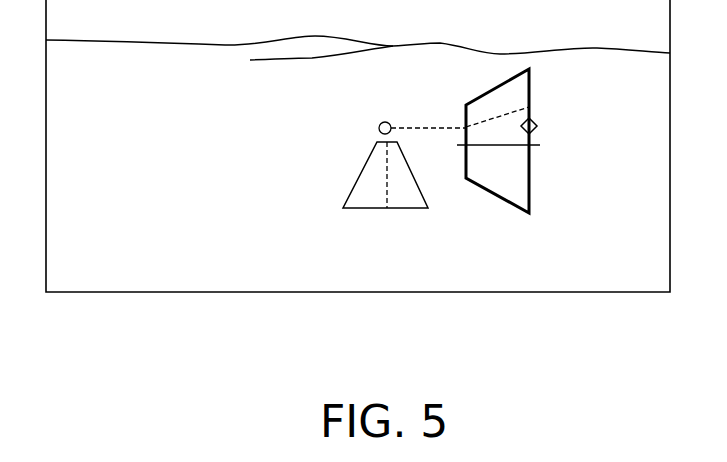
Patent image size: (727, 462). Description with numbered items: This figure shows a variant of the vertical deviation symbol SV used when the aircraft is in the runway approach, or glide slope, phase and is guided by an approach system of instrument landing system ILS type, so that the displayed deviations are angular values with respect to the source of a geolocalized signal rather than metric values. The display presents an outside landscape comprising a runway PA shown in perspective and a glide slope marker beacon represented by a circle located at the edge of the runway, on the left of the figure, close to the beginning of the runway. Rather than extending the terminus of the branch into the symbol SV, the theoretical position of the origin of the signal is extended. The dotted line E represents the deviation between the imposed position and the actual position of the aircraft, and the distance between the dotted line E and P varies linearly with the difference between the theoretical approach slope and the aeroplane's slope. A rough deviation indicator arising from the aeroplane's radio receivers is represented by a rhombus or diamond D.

The instrument landing system ILS is at (378, 127).
The runway PA is at (355, 183).
The dotted line E is at (530, 106).
The rhombus or diamond D is at (537, 126).
The element P is at (540, 145).
The vertical deviation symbol SV is at (538, 202).